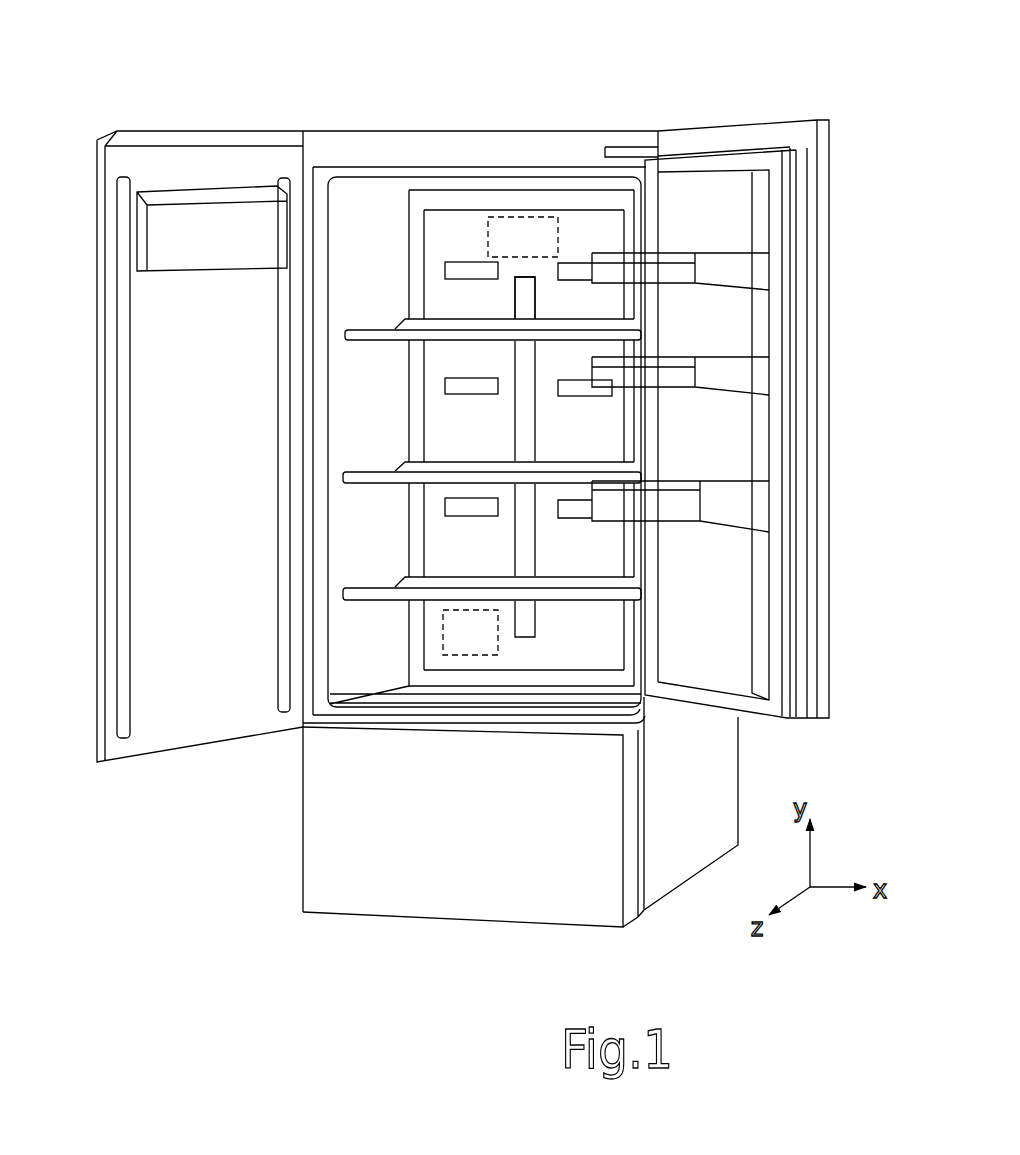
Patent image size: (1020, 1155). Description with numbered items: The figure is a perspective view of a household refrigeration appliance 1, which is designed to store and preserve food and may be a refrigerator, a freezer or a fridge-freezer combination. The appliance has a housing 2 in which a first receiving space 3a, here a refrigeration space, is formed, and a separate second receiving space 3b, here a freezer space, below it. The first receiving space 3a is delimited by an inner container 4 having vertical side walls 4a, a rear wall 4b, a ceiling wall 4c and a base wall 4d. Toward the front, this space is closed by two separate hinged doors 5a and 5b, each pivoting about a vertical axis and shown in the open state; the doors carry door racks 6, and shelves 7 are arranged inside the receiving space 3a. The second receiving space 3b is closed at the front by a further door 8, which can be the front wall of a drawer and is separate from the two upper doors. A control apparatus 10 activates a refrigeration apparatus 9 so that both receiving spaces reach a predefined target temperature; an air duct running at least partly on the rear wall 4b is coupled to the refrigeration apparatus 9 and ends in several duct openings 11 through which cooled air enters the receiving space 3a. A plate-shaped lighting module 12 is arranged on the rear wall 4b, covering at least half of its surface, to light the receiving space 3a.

The household refrigeration appliance 1 is at (405, 99).
The housing 2 is at (606, 119).
The first receiving space 3a is at (364, 430).
The second receiving space 3b is at (367, 791).
The inner container 4 is at (409, 367).
The side walls 4a is at (638, 213).
The rear wall 4b is at (461, 200).
The ceiling wall 4c is at (486, 165).
The base wall 4d is at (447, 699).
The door 5a is at (830, 556).
The door 5b is at (197, 130).
The door racks 6 is at (140, 233).
The shelves 7 is at (396, 690).
The further door 8 is at (366, 886).
The refrigeration apparatus 9 is at (470, 632).
The control apparatus 10 is at (523, 237).
The duct openings 11 is at (572, 263).
The lighting module 12 is at (578, 645).